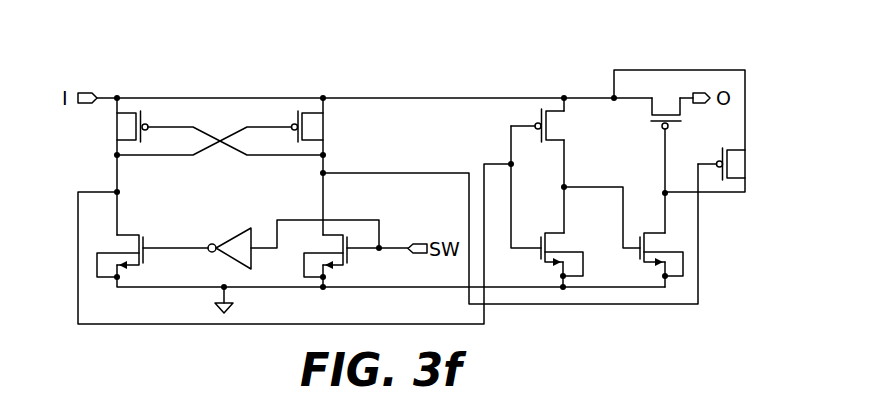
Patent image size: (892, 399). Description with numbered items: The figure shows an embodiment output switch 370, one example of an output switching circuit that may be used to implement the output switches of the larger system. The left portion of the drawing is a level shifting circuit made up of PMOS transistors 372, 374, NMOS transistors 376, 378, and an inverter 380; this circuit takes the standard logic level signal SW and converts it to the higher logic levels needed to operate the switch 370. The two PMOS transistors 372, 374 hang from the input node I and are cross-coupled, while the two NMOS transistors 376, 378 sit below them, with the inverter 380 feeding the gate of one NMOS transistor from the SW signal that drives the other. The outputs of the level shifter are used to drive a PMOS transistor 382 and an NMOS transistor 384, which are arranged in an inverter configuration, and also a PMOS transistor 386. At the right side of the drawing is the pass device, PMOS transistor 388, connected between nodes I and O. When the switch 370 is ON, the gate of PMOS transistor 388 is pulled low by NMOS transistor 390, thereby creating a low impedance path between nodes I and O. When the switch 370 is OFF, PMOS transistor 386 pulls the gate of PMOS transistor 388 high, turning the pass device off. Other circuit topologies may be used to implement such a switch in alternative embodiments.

The output switch 370 is at (112, 44).
The PMOS transistor 372 is at (118, 131).
The PMOS transistor 374 is at (315, 133).
The NMOS transistor 376 is at (124, 232).
The NMOS transistor 378 is at (351, 255).
The inverter 380 is at (242, 232).
The PMOS transistor 382 is at (553, 134).
The NMOS transistor 384 is at (548, 242).
The PMOS transistor 386 is at (740, 168).
The PMOS transistor 388 is at (682, 108).
The NMOS transistor 390 is at (666, 238).